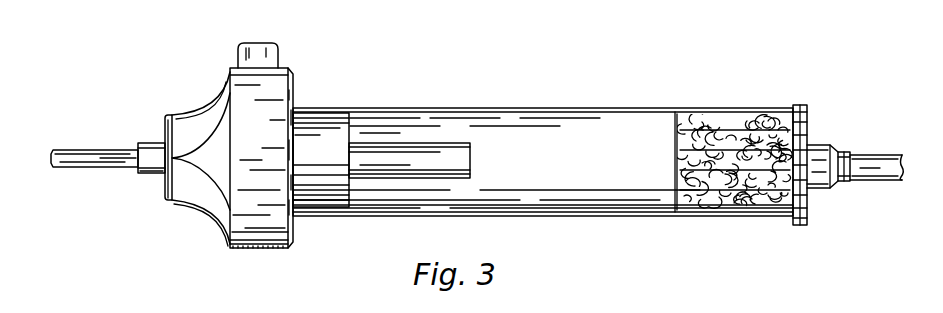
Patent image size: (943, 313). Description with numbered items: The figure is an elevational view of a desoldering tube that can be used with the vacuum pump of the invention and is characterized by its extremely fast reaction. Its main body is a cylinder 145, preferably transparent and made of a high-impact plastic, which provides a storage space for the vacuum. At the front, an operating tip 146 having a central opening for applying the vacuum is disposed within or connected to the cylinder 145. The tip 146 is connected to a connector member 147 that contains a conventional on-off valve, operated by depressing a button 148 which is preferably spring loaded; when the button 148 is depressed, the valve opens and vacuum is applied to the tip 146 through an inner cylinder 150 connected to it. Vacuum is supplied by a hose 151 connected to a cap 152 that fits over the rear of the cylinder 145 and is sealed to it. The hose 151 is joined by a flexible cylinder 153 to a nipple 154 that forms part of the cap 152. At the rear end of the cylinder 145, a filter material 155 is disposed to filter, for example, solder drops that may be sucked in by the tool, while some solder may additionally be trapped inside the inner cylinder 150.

The cylinder 145 is at (540, 107).
The operating tip 146 is at (93, 150).
The connector member 147 is at (203, 115).
The button 148 is at (258, 42).
The inner cylinder 150 is at (411, 145).
The hose 151 is at (873, 155).
The cap 152 is at (801, 105).
The flexible cylinder 153 is at (822, 189).
The nipple 154 is at (810, 148).
The filter material 155 is at (732, 120).